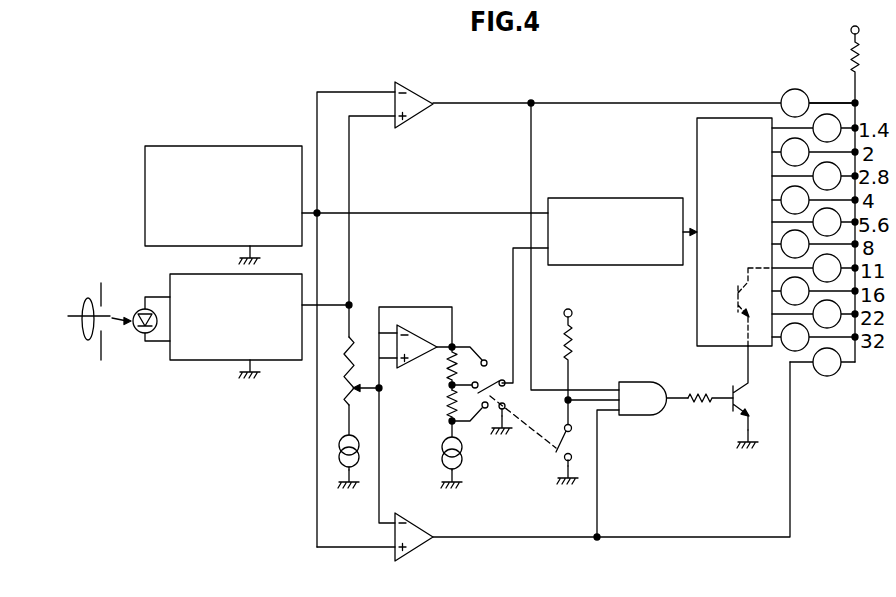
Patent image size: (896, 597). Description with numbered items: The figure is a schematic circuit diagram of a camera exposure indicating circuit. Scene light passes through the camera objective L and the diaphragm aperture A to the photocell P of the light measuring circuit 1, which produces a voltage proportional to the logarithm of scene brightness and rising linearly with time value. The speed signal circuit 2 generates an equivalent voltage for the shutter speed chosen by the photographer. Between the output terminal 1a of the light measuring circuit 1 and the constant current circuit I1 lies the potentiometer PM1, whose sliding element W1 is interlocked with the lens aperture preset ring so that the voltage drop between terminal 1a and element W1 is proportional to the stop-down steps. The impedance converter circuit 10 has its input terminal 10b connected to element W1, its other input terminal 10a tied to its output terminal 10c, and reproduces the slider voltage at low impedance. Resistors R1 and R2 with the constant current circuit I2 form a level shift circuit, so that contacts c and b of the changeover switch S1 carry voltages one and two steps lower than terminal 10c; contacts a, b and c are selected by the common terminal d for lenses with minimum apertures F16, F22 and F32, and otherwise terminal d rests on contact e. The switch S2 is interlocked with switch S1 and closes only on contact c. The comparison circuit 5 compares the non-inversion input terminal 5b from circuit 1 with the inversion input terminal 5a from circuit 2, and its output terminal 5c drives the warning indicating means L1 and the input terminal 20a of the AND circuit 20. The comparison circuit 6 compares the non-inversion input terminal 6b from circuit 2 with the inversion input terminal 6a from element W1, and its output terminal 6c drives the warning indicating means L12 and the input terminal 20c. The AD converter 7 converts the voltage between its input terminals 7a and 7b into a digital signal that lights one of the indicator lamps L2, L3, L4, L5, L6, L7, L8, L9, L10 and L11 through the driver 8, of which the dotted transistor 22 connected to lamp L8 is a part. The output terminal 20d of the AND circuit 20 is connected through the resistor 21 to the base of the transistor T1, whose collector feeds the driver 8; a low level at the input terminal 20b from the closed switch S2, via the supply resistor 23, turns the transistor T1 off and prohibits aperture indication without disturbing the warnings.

The light measuring circuit 1 is at (206, 360).
The output terminal 1a is at (311, 313).
The speed signal circuit 2 is at (211, 147).
The comparison circuit 5 is at (421, 74).
The inversion input terminal 5a is at (334, 92).
The non-inversion input terminal 5b is at (373, 117).
The output terminal 5c is at (473, 102).
The comparison circuit 6 is at (421, 546).
The inversion input terminal 6a is at (386, 522).
The non-inversion input terminal 6b is at (357, 548).
The output terminal 6c is at (487, 538).
The AD converter 7 is at (585, 197).
The input terminal 7a is at (541, 213).
The input terminal 7b is at (541, 249).
The driver 8 is at (697, 147).
The impedance converter circuit 10 is at (384, 360).
The input terminal 10a is at (385, 333).
The input terminal 10b is at (384, 392).
The output terminal 10c is at (452, 345).
The AND circuit 20 is at (649, 416).
The input terminal 20a is at (580, 391).
The input terminal 20b is at (603, 390).
The input terminal 20c is at (607, 412).
The output terminal 20d is at (686, 399).
The resistor 21 is at (697, 395).
The transistor 22 is at (736, 294).
The resistor 23 is at (588, 354).
The camera objective L is at (82, 338).
The diaphragm aperture A is at (99, 358).
The photocell P is at (143, 334).
The potentiometer PM1 is at (197, 378).
The sliding element W1 is at (377, 387).
The constant current circuit I1 is at (339, 452).
The constant current circuit I2 is at (442, 462).
The resistor R1 is at (442, 368).
The resistor R2 is at (437, 407).
The changeover switch S1 is at (490, 392).
The switch S2 is at (556, 447).
The minimum diaphragm aperture value F32 is at (468, 347).
The minimum diaphragm aperture value F22 is at (468, 396).
The minimum diaphragm aperture value F16 is at (470, 424).
The contact a is at (482, 415).
The contact b is at (472, 376).
The contact c is at (486, 354).
The common terminal d is at (506, 374).
The contact e is at (504, 418).
The transistor T1 is at (742, 393).
The indicating means L1 is at (818, 103).
The indicator lamp L2 is at (815, 128).
The indicator lamp L3 is at (815, 152).
The indicator lamp L4 is at (815, 176).
The indicator lamp L5 is at (815, 200).
The indicator lamp L6 is at (815, 222).
The indicator lamp L7 is at (815, 244).
The indicator lamp L8 is at (815, 268).
The indicator lamp L9 is at (815, 291).
The indicator lamp L10 is at (815, 314).
The indicator lamp L11 is at (815, 337).
The indicating means L12 is at (822, 362).